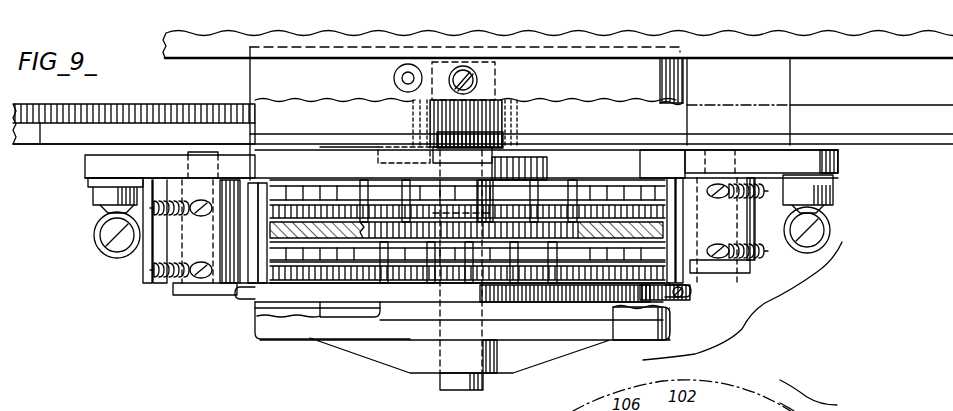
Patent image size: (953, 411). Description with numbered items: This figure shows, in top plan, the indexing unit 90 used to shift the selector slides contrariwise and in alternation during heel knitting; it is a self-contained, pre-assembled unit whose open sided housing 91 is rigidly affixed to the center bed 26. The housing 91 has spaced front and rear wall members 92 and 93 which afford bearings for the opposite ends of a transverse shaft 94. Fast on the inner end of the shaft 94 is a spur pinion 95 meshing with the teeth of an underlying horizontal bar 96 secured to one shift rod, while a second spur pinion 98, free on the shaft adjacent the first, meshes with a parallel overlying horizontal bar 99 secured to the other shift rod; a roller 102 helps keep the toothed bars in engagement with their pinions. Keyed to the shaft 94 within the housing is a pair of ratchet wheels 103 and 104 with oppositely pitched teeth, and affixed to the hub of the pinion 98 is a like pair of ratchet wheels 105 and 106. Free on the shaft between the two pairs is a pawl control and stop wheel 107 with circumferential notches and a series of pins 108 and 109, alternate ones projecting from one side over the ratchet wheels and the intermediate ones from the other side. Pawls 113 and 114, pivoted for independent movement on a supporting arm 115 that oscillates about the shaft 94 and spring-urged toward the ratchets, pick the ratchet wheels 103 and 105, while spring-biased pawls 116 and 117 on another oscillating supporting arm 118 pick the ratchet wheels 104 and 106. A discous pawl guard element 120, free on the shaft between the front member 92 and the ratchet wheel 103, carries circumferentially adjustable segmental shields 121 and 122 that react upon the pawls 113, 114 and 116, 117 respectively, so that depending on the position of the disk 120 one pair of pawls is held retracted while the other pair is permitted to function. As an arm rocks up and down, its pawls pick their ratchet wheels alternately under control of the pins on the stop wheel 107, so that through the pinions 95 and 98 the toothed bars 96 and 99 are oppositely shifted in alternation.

The center bed 26 is at (925, 49).
The indexing unit 90 is at (752, 318).
The housing 91 is at (617, 308).
The front wall member 92 is at (365, 330).
The rear wall member 93 is at (660, 82).
The transverse shaft 94 is at (450, 397).
The spur pinion 95 is at (514, 117).
The horizontal bar 96 is at (176, 110).
The spur pinion 98 is at (410, 133).
The horizontal bar 99 is at (866, 112).
The roller 102 is at (500, 112).
The ratchet wheel 103 is at (297, 283).
The ratchet wheel 104 is at (332, 283).
The ratchet wheel 105 is at (307, 211).
The ratchet wheel 106 is at (346, 189).
The pawl control and stop wheel 107 is at (657, 224).
The pins 108 is at (268, 292).
The pins 109 is at (298, 192).
The pawl 113 is at (234, 293).
The pawl 114 is at (386, 163).
The supporting arm 115 is at (90, 170).
The pawl 116 is at (663, 255).
The pawl 117 is at (660, 186).
The supporting arm 118 is at (840, 163).
The pawl guard element 120 is at (461, 296).
The segmental shield 121 is at (253, 238).
The segmental shield 122 is at (673, 231).